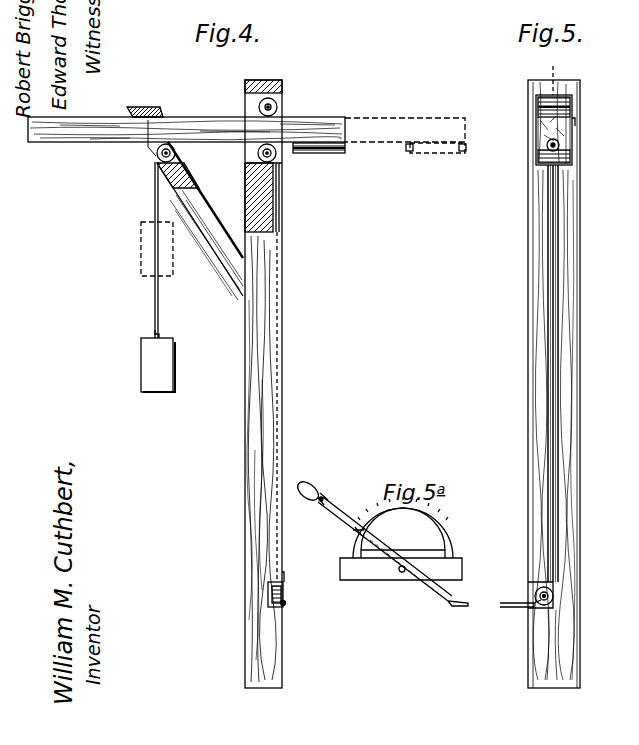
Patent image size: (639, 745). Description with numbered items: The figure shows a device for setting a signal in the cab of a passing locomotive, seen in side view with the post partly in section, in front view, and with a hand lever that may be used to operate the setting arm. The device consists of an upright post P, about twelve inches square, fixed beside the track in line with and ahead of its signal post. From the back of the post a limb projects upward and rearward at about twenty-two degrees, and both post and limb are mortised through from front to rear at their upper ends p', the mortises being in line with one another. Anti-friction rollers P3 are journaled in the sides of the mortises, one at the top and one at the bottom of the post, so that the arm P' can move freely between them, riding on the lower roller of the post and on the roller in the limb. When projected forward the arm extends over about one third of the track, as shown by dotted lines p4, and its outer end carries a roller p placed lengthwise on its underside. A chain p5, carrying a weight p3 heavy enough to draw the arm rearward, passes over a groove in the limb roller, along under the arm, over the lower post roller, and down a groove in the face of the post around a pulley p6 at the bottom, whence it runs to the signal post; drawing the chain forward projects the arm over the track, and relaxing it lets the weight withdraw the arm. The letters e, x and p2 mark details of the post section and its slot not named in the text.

In FIG. 4, the post P is at (274, 384).
In FIG. 5, the post P is at (564, 384).
In FIG. 4, the arm P' is at (186, 119).
In FIG. 4, the mortises p' is at (170, 106).
In FIG. 4, the anti-friction rollers P3 is at (278, 107).
In FIG. 5, the anti-friction rollers P3 is at (536, 111).
In FIG. 4, the slot channel p2 is at (203, 196).
In FIG. 5, the slot channel p2 is at (548, 322).
In FIG. 4, the weight p3 is at (141, 252).
In FIG. 4, the projected arm position (dotted lines) p4 is at (405, 125).
In FIG. 4, the chain p5 is at (160, 298).
In FIG. 5A, the chain p5 is at (470, 606).
In FIG. 5, the chain p5 is at (507, 608).
In FIG. 4, the pulley p6 is at (286, 603).
In FIG. 5, the pulley p6 is at (537, 594).
In FIG. 4, the roller p is at (365, 161).
In FIG. 4, the eye hook e is at (144, 142).
In FIG. 5, the eye hook e is at (576, 124).
In FIG. 5, the slot x is at (522, 238).